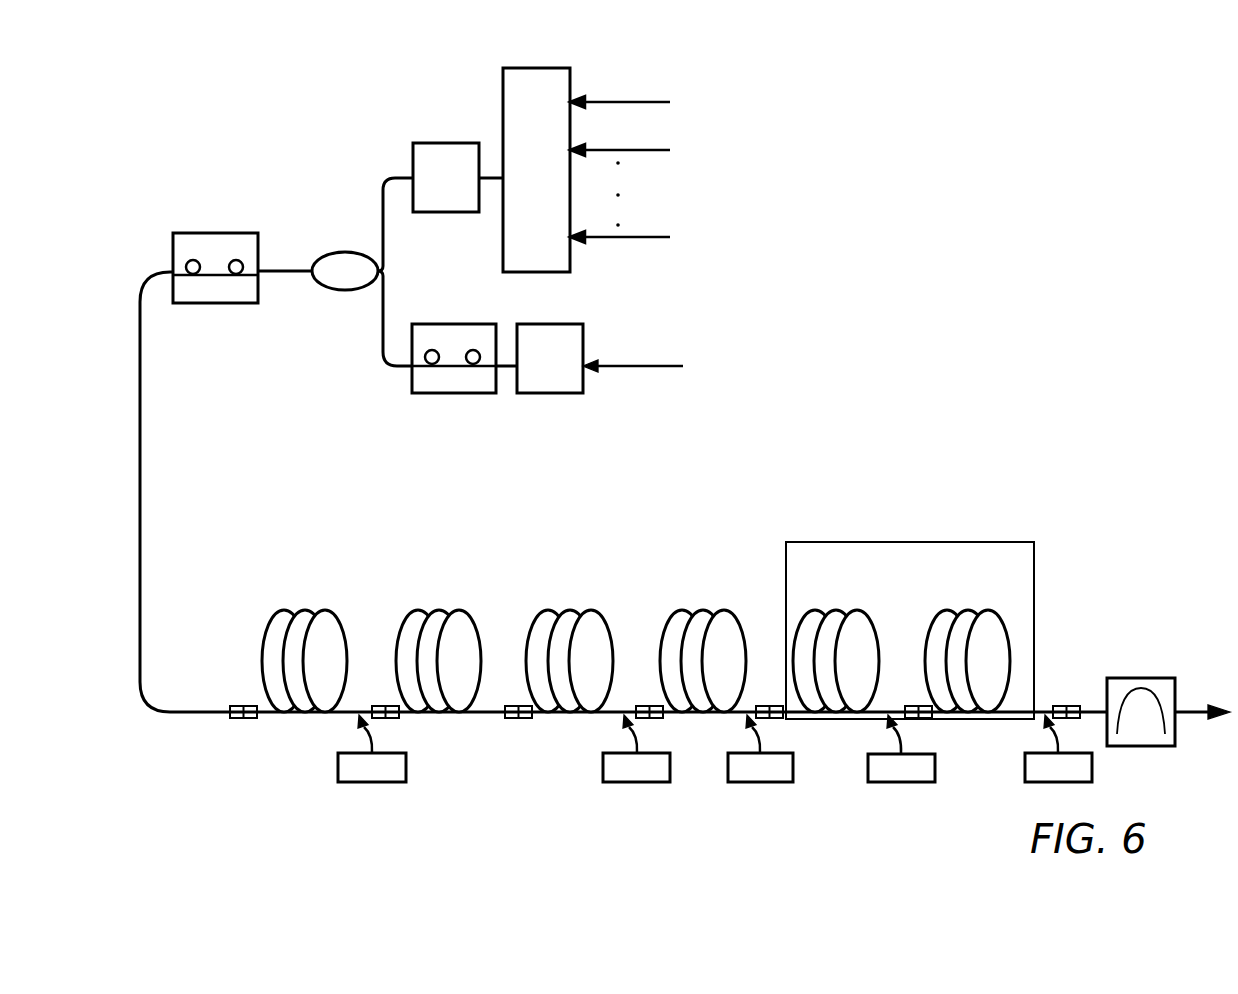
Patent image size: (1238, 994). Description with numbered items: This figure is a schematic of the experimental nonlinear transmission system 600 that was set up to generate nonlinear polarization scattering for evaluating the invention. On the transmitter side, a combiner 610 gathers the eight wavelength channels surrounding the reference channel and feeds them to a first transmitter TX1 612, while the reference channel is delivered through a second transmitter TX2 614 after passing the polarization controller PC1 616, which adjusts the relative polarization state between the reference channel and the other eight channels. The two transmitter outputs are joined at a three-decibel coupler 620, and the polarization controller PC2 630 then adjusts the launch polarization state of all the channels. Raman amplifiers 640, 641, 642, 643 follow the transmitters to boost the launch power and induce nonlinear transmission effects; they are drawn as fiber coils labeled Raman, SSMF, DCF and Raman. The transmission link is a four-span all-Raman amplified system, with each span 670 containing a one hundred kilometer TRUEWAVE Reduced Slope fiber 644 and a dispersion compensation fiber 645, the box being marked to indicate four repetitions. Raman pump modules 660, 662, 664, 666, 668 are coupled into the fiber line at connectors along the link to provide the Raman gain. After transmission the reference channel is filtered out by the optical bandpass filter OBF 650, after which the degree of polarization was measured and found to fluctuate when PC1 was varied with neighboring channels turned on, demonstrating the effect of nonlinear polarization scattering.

The optical transmission system 600 is at (1094, 79).
The combiner 610 is at (548, 68).
The first transmitter TX1 612 is at (447, 143).
The second transmitter TX2 614 is at (548, 393).
The polarization controller PC1 616 is at (445, 393).
The 3dB coupler 620 is at (340, 290).
The polarization controller PC2 630 is at (250, 233).
The Raman amplifier 640 is at (273, 640).
The Raman amplifier 641 is at (407, 640).
The Raman amplifier 642 is at (538, 641).
The Raman amplifier 643 is at (672, 641).
The TRUEWAVE Reduced Slope (TWRS) fiber 644 is at (803, 641).
The dispersion compensation fiber (DCF) 645 is at (938, 637).
The optical bandpass filter (OBF) 650 is at (1165, 746).
The Raman pump module RPM 660 is at (338, 778).
The Raman pump module RPM 662 is at (603, 778).
The Raman pump module RPM 664 is at (728, 778).
The Raman pump module RPM 666 is at (868, 778).
The Raman pump module RPM 668 is at (1025, 778).
The span 670 is at (910, 542).